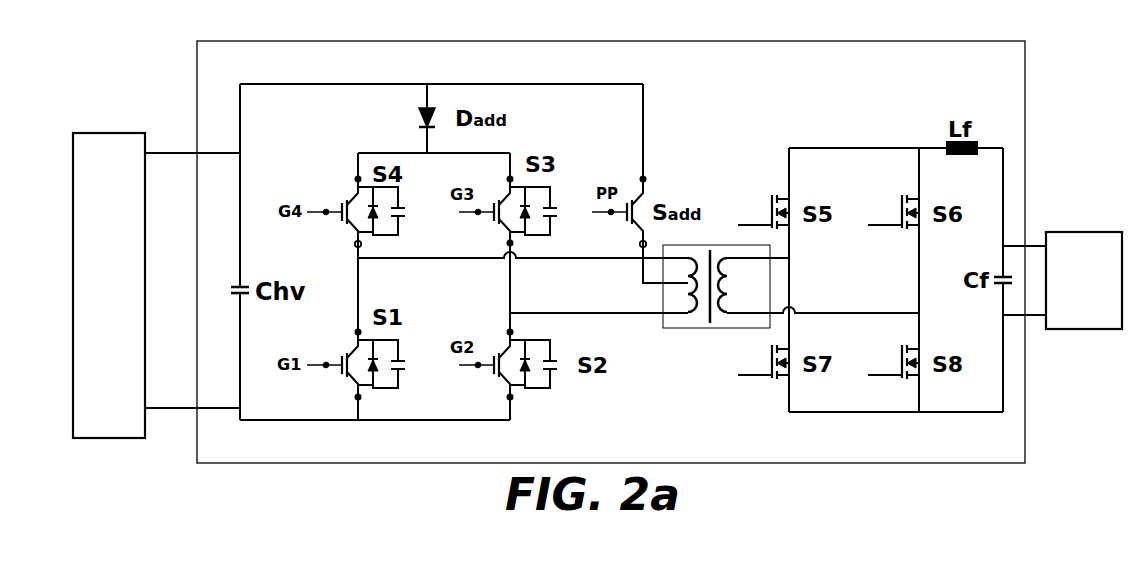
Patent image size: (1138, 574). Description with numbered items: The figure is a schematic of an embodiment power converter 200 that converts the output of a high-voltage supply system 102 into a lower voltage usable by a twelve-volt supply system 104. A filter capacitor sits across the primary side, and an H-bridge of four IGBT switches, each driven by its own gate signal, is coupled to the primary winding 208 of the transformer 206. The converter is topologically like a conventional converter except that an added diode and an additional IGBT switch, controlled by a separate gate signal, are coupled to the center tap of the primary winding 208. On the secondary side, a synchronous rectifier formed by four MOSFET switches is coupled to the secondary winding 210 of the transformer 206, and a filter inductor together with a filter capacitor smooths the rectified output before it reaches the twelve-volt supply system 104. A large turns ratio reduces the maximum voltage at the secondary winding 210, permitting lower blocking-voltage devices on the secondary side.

The high-voltage supply system 102 is at (110, 133).
The 12 V supply system 104 is at (1103, 232).
The power converter 200 is at (408, 41).
The transformer 206 is at (688, 328).
The primary winding 208 is at (686, 299).
The secondary winding 210 is at (731, 278).